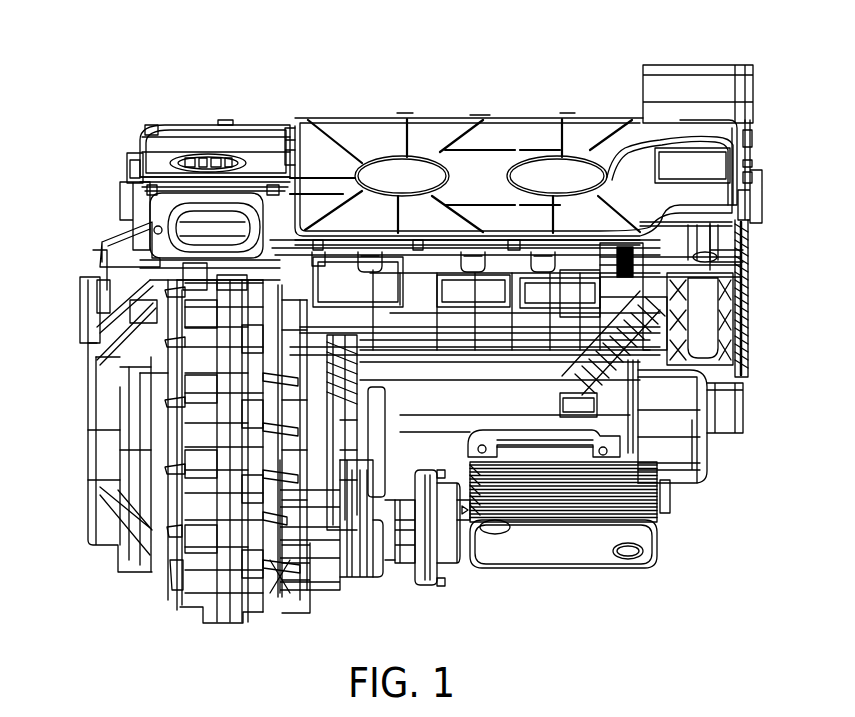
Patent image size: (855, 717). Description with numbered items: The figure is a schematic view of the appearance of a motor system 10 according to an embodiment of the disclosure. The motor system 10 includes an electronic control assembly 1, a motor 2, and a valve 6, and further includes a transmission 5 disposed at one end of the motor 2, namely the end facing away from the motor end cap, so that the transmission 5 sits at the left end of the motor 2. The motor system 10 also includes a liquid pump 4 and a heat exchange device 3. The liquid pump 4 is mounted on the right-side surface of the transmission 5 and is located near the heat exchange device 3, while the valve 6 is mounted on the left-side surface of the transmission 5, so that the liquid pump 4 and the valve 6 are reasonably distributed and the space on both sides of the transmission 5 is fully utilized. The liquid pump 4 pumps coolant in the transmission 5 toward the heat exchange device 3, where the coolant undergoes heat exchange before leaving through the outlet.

The motor system 10 is at (70, 82).
The electronic control assembly 1 is at (407, 180).
The motor 2 is at (660, 398).
The heat exchange device 3 is at (567, 532).
The liquid pump 4 is at (388, 540).
The transmission 5 is at (258, 557).
The valve 6 is at (88, 311).